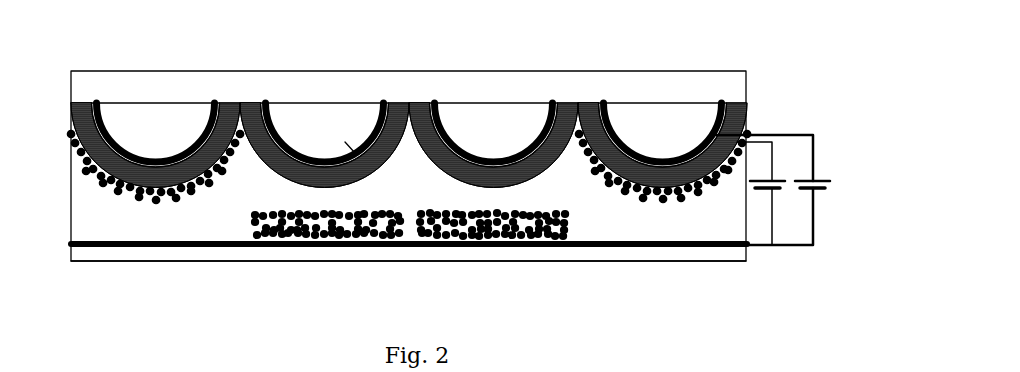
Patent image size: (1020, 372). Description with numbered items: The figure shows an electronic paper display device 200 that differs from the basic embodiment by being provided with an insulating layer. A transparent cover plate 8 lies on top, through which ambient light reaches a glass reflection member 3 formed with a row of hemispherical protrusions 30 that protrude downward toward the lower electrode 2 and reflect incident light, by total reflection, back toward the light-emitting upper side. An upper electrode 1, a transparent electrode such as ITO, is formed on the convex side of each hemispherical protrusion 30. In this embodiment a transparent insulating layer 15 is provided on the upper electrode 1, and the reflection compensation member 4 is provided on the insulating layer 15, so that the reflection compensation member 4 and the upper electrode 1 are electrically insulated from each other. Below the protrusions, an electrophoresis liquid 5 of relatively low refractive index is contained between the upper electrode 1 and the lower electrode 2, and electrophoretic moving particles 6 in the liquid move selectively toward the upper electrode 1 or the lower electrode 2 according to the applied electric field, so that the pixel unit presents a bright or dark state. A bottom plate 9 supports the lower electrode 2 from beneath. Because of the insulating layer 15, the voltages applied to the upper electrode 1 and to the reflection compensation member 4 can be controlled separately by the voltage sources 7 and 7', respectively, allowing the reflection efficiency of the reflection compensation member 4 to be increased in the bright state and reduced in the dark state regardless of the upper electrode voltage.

The electronic paper display device 200 is at (62, 42).
The cover plate 8 is at (650, 87).
The upper electrode 1 is at (743, 110).
The reflection member 3 is at (82, 135).
The reflection compensation member 4 is at (280, 177).
The hemispherical protrusions 30 is at (377, 167).
The insulating layer 15 is at (78, 160).
The electrophoretic moving particles 6 is at (97, 180).
The electrophoresis liquid 5 is at (140, 229).
The lower electrode 2 is at (697, 248).
The bottom plate 9 is at (635, 252).
The voltage source 7 is at (796, 190).
The voltage source 7' is at (790, 201).